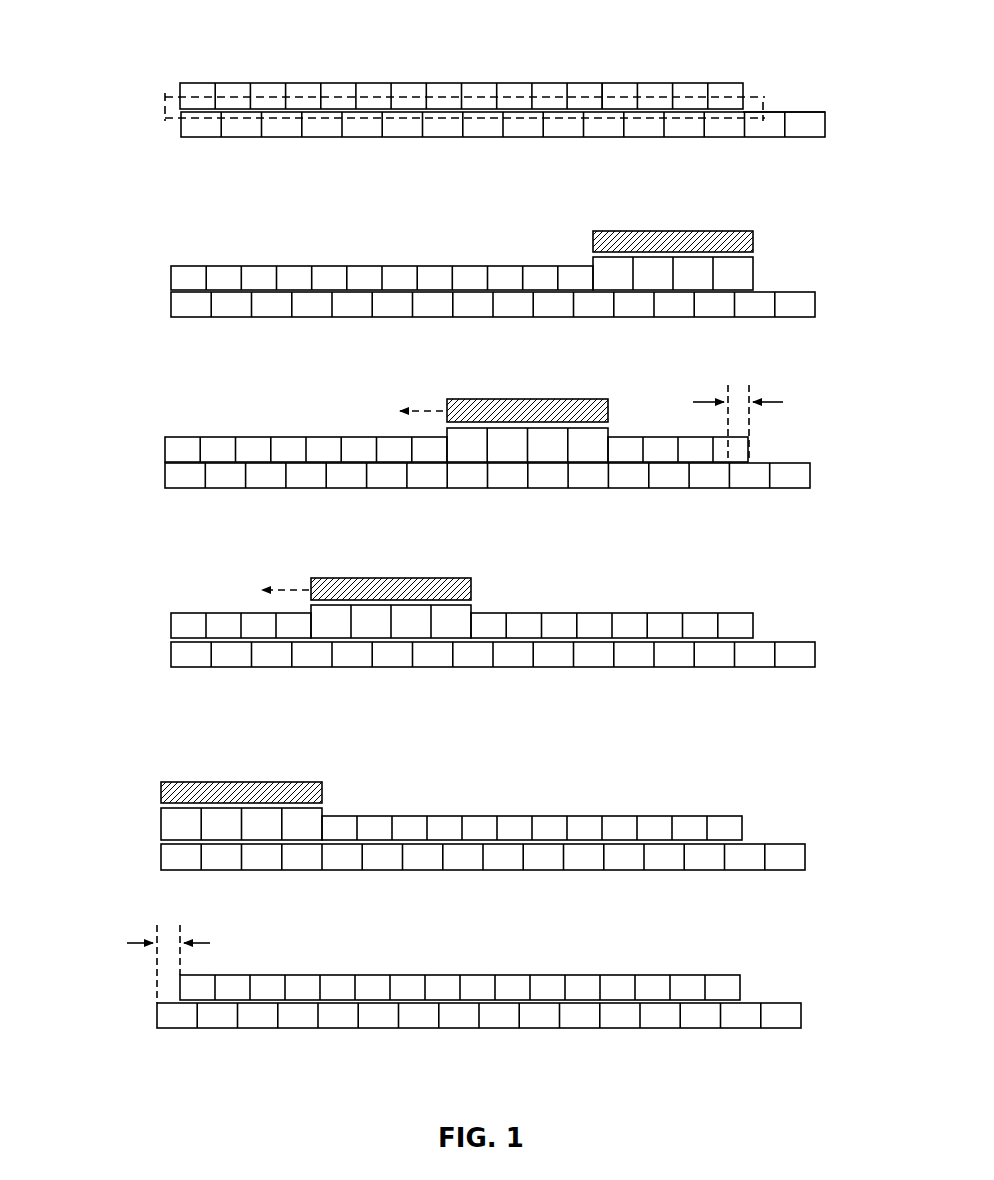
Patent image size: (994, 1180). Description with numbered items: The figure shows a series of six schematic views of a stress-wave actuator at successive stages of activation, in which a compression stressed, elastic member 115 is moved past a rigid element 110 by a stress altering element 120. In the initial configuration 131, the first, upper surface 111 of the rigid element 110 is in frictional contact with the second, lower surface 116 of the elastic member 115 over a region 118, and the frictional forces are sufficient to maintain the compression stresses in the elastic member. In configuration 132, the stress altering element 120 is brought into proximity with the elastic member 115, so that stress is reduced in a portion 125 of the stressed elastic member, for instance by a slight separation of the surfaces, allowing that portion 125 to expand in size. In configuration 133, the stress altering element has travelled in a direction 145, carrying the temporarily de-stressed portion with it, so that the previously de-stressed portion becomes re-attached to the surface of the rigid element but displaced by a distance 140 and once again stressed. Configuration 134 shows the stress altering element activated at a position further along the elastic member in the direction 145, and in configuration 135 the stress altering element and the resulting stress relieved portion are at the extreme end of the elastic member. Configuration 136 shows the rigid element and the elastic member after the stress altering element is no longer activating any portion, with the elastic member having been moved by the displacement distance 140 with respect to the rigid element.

The rigid element 110 is at (324, 142).
The upper surface of the rigid element 111 is at (773, 112).
The compression stressed elastic member 115 is at (400, 79).
The lower surface of the elastic member 116 is at (608, 106).
The region of frictional contact 118 is at (160, 107).
The stress altering element 120 is at (755, 241).
The portion of the stressed elastic member 125 is at (755, 276).
The displacement distance 140 is at (743, 402).
The direction of travel 145 is at (424, 410).
The initial configuration 131 is at (469, 169).
The second configuration 132 is at (663, 274).
The third configuration 133 is at (452, 684).
The fourth configuration 134 is at (493, 643).
The fifth configuration 135 is at (483, 842).
The final configuration 136 is at (479, 1025).